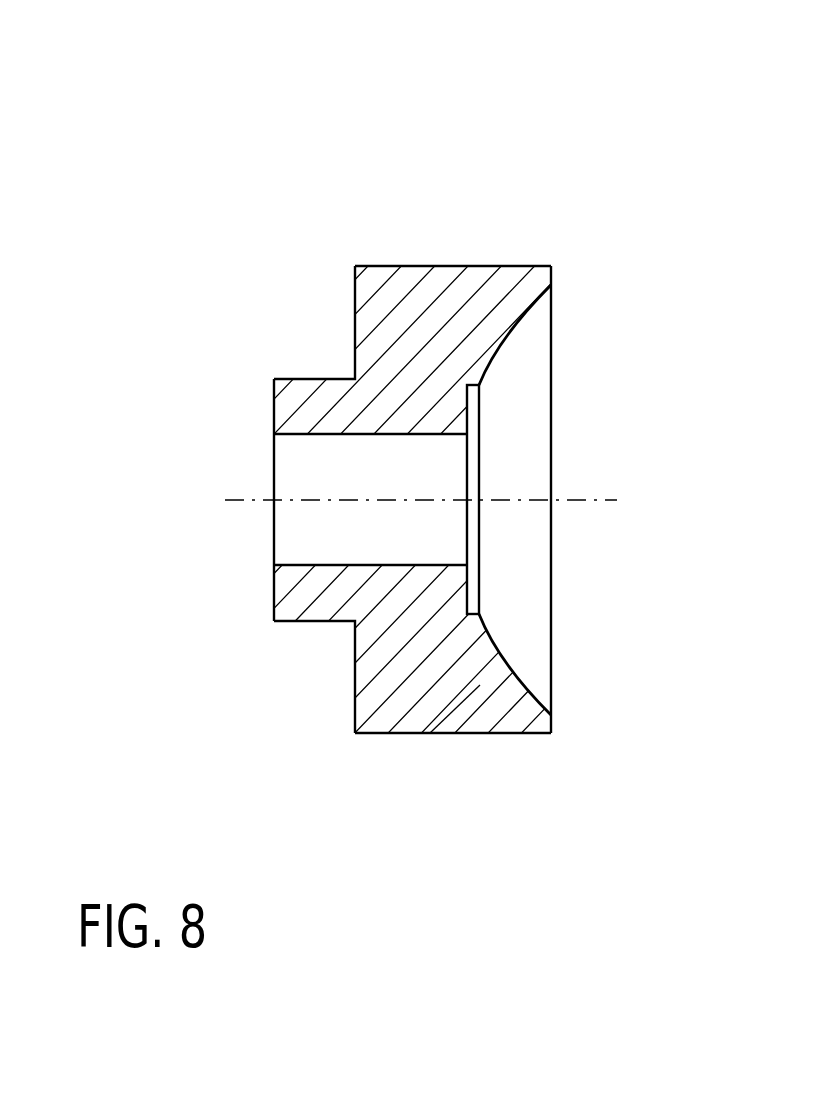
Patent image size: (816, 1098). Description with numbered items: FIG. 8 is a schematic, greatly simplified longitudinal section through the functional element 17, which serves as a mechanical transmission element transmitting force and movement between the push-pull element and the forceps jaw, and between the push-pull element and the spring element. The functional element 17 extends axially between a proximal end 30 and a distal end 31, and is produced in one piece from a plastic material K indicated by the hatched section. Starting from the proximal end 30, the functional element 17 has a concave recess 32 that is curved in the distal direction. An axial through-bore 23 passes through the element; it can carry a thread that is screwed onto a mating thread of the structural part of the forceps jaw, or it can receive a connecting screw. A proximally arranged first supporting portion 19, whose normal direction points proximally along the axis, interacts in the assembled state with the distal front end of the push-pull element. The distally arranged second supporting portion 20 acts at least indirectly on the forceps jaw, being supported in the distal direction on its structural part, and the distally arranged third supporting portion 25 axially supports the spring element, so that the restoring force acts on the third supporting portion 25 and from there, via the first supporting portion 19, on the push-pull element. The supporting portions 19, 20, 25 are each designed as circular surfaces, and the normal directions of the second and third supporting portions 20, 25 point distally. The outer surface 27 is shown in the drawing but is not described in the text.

The functional element 17 is at (436, 98).
The outer circumferential surface 27 is at (445, 266).
The proximal end 30 is at (555, 277).
The distal end 31 is at (274, 405).
The second supporting portion 20 is at (274, 588).
The third supporting portion 25 is at (355, 692).
The axial through-bore 23 is at (284, 470).
The first supporting portion 19 is at (468, 601).
The concave recess 32 is at (527, 425).
The plastic material K is at (453, 715).